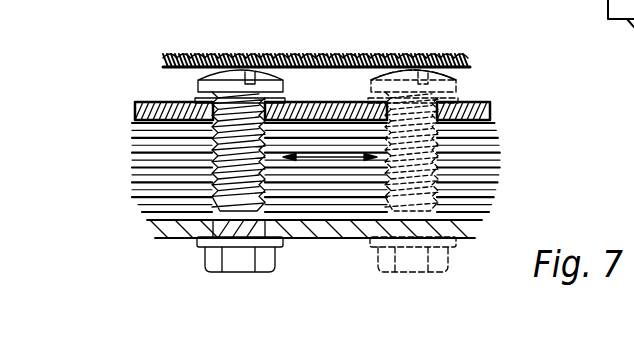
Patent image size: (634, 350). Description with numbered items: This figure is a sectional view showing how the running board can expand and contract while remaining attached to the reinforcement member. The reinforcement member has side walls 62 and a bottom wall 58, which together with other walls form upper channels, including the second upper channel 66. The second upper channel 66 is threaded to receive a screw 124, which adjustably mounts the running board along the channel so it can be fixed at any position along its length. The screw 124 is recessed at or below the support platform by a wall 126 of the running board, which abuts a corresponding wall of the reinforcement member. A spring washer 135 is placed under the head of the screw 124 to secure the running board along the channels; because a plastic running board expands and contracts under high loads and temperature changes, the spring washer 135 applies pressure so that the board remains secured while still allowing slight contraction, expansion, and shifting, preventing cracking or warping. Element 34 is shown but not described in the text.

The wall 126 is at (319, 100).
The second upper channel 66 is at (160, 102).
The side walls 62 is at (167, 163).
The screw 124 is at (262, 67).
The screw head 34 is at (409, 67).
The spring washer 135 is at (202, 100).
The bottom wall 58 is at (345, 238).